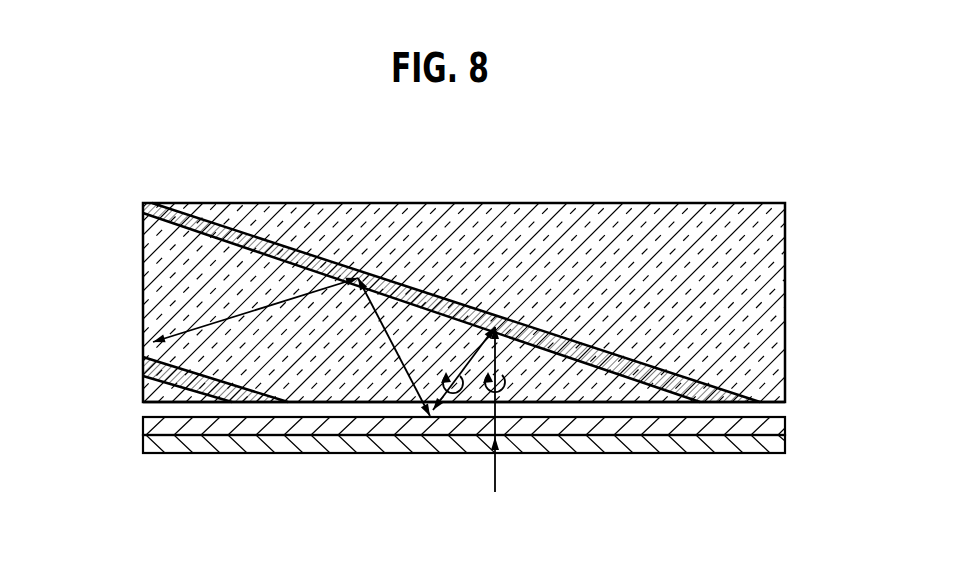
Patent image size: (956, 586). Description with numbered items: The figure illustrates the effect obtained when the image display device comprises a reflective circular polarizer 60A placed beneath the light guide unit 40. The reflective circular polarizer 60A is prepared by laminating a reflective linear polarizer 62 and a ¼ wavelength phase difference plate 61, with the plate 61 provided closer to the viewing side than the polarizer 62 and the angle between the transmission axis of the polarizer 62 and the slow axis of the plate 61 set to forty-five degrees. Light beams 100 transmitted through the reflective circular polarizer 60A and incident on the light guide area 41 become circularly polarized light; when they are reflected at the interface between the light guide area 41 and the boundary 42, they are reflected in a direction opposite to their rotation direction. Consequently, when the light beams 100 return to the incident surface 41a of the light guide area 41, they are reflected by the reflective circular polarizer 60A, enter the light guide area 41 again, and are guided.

The light guide unit 40 is at (420, 330).
The light guide area 41 is at (155, 235).
The boundary 42 is at (185, 203).
The incident surface 41a is at (617, 402).
The reflective circular polarizer 60A is at (447, 425).
The ¼ wavelength phase difference plate 61 is at (785, 427).
The reflective linear polarizer 62 is at (785, 447).
The light beams 100 is at (334, 402).